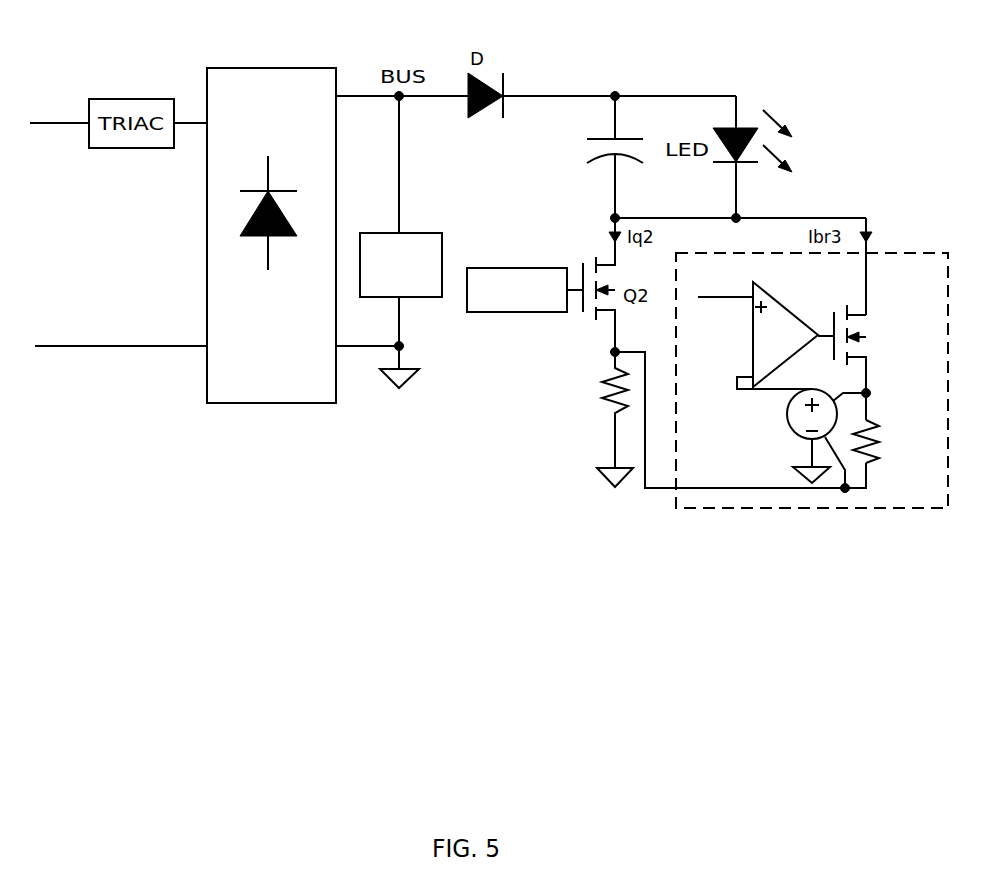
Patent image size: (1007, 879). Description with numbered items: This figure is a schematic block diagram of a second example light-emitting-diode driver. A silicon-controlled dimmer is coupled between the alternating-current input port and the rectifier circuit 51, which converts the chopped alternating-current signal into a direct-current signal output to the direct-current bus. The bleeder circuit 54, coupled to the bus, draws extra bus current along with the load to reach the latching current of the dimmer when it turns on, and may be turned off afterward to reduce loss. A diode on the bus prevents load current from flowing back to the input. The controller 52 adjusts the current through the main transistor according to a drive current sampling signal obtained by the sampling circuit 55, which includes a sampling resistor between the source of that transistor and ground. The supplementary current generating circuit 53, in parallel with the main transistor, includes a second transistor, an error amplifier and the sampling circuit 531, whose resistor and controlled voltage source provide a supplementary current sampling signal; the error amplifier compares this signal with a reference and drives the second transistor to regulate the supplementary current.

The rectifier circuit 51 is at (240, 68).
The controller 52 is at (518, 307).
The supplementary current generating circuit 53 is at (812, 411).
The sampling circuit 531 is at (877, 406).
The bleeder circuit 54 is at (407, 233).
The sampling circuit 55 is at (598, 427).